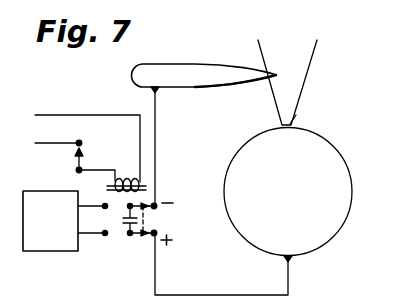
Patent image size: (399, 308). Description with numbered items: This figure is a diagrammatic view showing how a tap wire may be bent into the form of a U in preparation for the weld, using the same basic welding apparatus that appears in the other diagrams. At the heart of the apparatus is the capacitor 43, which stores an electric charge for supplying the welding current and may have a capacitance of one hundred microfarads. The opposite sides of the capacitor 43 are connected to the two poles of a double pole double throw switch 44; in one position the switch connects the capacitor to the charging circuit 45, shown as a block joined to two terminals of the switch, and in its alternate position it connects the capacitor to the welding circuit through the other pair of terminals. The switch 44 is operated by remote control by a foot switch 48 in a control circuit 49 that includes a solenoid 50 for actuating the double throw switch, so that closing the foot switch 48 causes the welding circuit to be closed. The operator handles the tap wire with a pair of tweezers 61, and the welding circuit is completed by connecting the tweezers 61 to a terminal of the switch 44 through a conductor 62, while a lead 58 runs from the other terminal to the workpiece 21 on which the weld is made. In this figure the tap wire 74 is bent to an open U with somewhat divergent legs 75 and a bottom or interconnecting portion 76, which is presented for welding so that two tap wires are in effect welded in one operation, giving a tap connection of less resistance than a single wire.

The sphere / ball workpiece 21 is at (335, 145).
The capacitor 43 is at (125, 236).
The double pole double throw switch 44 is at (147, 238).
The charging circuit 45 is at (38, 252).
The foot switch 48 is at (73, 160).
The control circuit 49 is at (69, 112).
The solenoid 50 is at (127, 178).
The conductor lead 58 is at (216, 295).
The tweezers 61 is at (178, 63).
The conductor 62 is at (157, 102).
The tap wire 74 is at (309, 67).
The divergent legs 75 is at (262, 48).
The bottom or interconnecting portion 76 is at (296, 117).